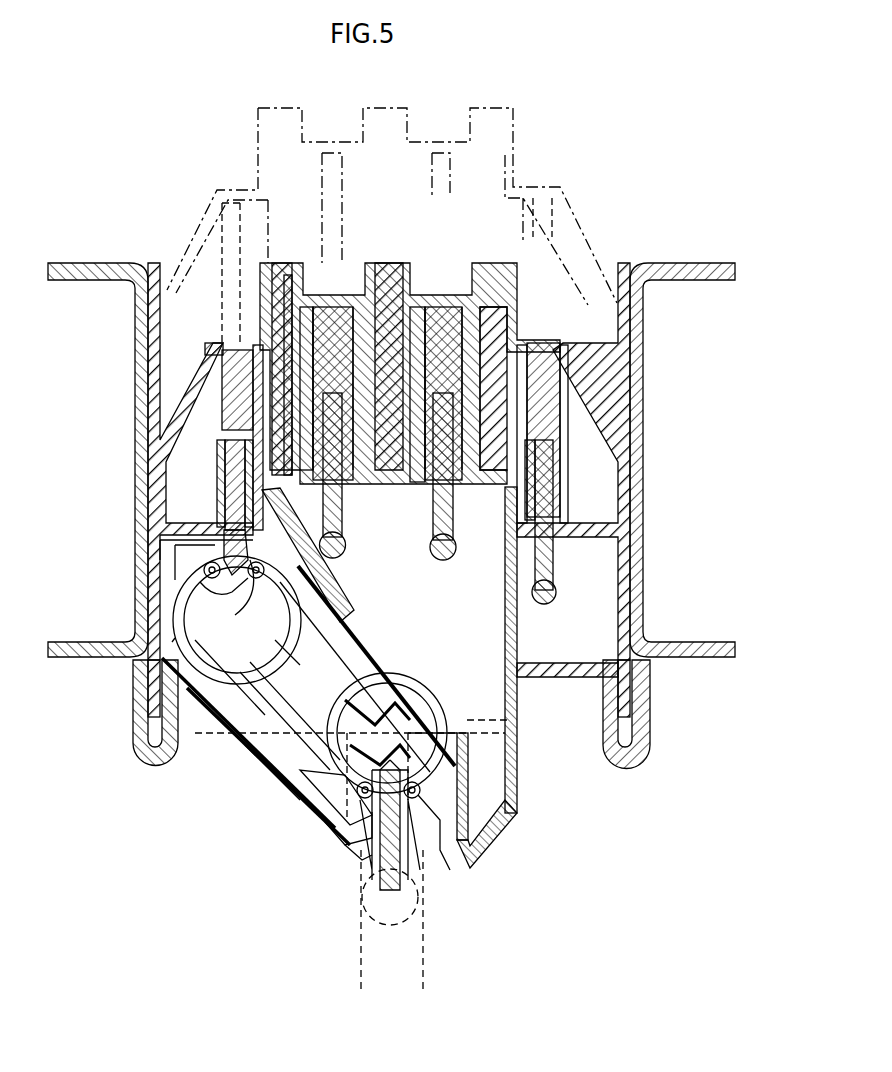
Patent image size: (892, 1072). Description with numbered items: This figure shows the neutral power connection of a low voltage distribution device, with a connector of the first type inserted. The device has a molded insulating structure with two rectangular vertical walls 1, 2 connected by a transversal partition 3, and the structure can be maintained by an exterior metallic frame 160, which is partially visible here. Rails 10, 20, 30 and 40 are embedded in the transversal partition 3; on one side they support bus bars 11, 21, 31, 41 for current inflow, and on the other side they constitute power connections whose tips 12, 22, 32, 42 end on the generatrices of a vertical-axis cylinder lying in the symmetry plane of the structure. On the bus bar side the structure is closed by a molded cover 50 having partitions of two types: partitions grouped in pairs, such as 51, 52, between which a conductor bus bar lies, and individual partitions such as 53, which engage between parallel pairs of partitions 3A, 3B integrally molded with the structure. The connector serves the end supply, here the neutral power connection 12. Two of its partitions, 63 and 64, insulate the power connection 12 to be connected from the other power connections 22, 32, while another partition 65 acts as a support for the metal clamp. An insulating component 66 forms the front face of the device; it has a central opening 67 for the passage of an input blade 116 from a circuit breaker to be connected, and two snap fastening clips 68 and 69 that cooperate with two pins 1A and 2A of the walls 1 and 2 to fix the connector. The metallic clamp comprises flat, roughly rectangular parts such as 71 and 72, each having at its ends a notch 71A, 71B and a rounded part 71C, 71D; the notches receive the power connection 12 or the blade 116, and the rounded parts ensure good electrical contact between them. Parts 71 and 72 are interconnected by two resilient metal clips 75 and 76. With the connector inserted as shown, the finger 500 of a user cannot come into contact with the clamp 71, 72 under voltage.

The exterior metallic frame 160 is at (100, 268).
The vertical wall 1 is at (150, 480).
The pin 1A is at (142, 700).
The snap fastening clip 68 is at (133, 737).
The vertical wall 2 is at (626, 545).
The pin 2A is at (633, 700).
The snap fastening clip 69 is at (645, 750).
The molded cover 50 is at (514, 301).
The individual partition 53 is at (280, 278).
The partition 52 is at (283, 350).
The partition 51 is at (207, 350).
The bus bar 11 is at (232, 375).
The rail 20 is at (316, 478).
The rail 10 is at (225, 495).
The partition 3A is at (220, 450).
The partition 3B is at (247, 462).
The bus bar 21 is at (330, 335).
The tip of power connection 22 is at (344, 540).
The rail 30 is at (415, 418).
The bus bar 31 is at (438, 340).
The tip of power connection 32 is at (454, 542).
The rail 40 is at (555, 518).
The bus bar 41 is at (546, 345).
The tip of power connection 42 is at (554, 596).
The transversal partition 3 is at (535, 462).
The partition 64 is at (512, 636).
The partition 65 is at (490, 838).
The partition 63 is at (332, 585).
The tip of power connection 12 is at (204, 570).
The rounded part 71C is at (233, 600).
The notch 71A is at (230, 613).
The flat rectangular part 72 is at (350, 660).
The resilient metal clip 76 is at (382, 680).
The flat rectangular part 71 is at (287, 735).
The resilient metal clip 75 is at (280, 693).
The insulating component 66 is at (264, 764).
The notch 71B is at (320, 802).
The rounded part 71D is at (338, 832).
The input blade 116 is at (383, 880).
The central opening 67 is at (410, 875).
The finger 500 is at (425, 940).